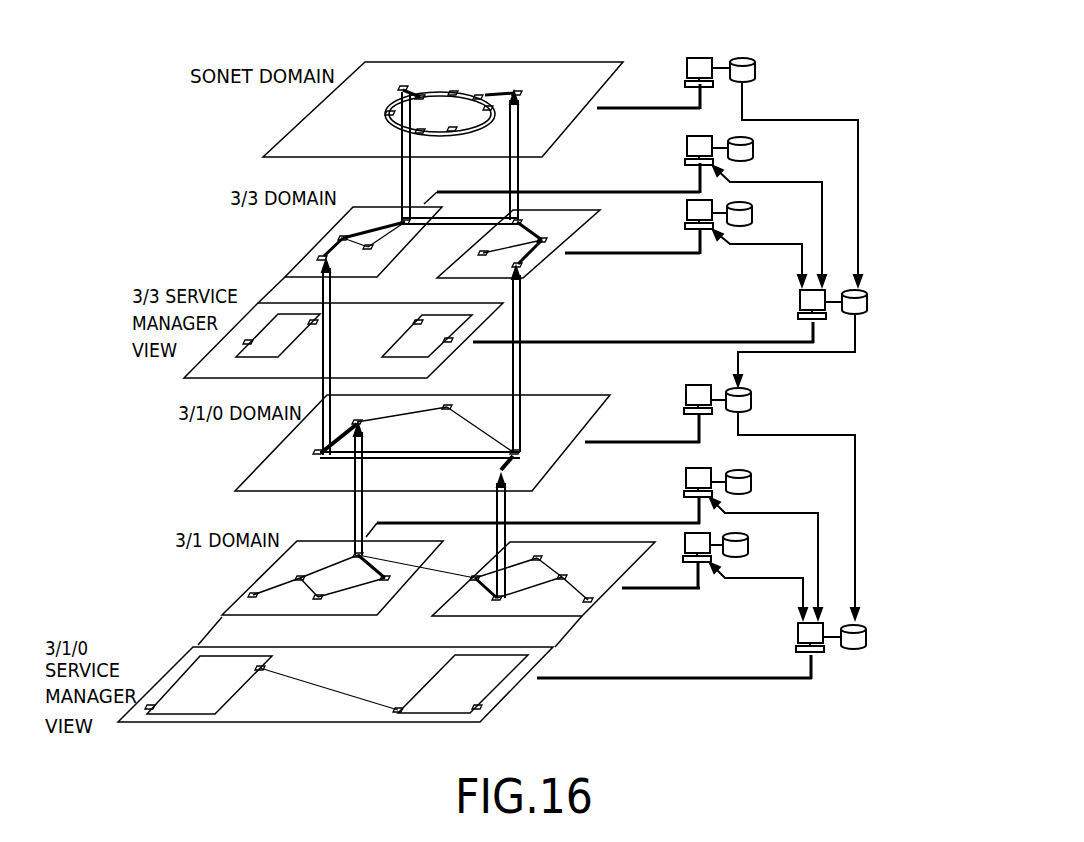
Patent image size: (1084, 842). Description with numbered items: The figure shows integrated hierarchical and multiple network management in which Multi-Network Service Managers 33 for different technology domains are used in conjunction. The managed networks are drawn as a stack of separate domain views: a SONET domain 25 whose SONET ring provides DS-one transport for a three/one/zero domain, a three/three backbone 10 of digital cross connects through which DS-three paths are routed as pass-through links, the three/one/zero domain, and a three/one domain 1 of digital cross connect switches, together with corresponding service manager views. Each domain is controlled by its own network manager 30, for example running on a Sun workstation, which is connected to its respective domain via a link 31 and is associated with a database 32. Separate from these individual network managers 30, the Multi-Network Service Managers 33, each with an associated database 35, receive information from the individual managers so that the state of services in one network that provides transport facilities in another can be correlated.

The 3/1 domain 1 is at (250, 480).
The backbone 10 is at (320, 242).
The SONET domain 25 is at (368, 60).
The 46020 network manager 30 is at (700, 58).
The link 31 is at (650, 107).
The database 32 is at (756, 67).
The Multi-Network Service Manager 33 is at (800, 302).
The service manager database 35 is at (870, 302).